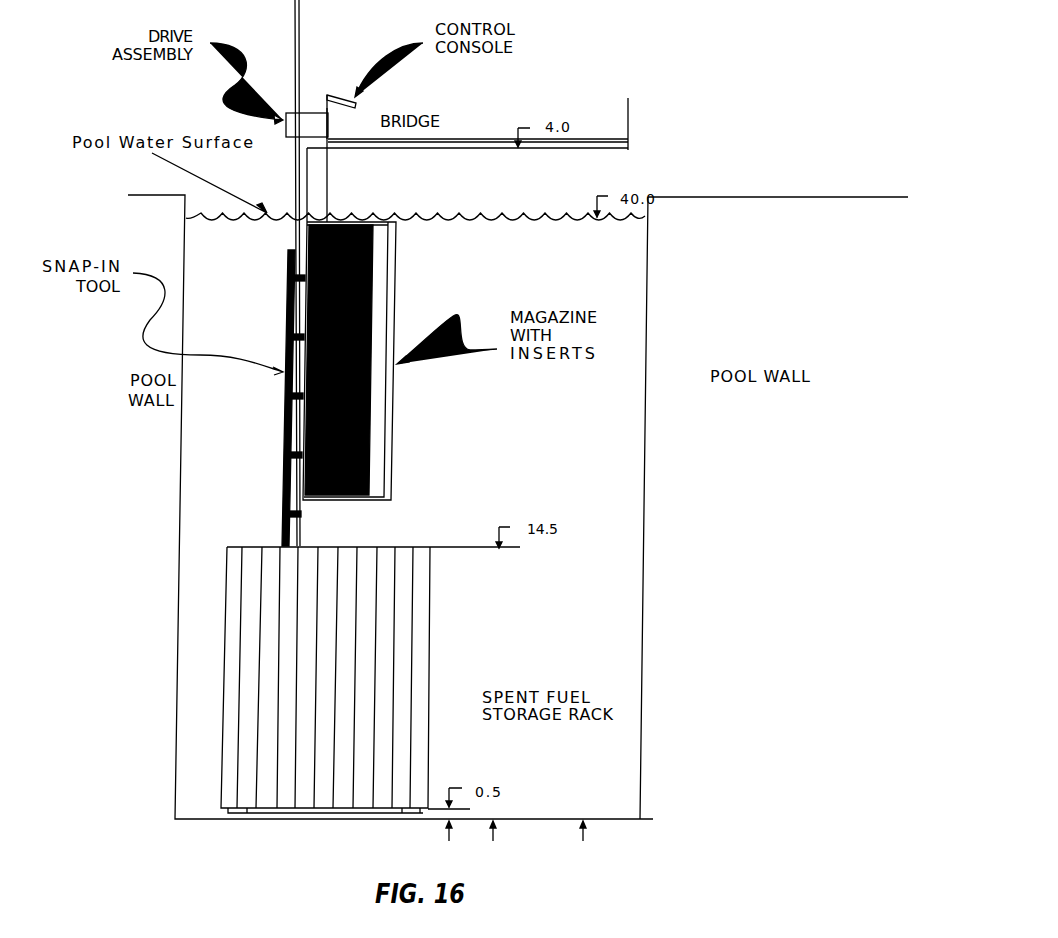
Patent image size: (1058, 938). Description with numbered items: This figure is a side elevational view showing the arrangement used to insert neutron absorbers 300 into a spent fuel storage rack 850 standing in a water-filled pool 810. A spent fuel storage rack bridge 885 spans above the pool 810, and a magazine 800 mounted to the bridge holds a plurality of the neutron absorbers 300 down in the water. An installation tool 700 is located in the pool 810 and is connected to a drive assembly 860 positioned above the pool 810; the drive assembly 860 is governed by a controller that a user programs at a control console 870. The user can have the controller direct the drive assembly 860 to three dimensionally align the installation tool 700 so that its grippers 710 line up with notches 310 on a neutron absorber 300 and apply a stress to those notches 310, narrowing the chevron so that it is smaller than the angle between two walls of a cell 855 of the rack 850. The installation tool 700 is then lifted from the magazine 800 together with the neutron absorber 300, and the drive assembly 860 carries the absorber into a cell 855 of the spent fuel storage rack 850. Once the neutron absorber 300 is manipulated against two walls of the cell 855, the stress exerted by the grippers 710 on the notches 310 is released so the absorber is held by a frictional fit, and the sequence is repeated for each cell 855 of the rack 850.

The drive assembly 860 is at (303, 121).
The control console 870 is at (357, 98).
The bridge 885 is at (628, 145).
The magazine 800 is at (390, 304).
The neutron absorber 300 is at (430, 312).
The notches 310 is at (305, 337).
The installation tool 700 is at (327, 398).
The grippers 710 is at (285, 272).
The cell 855 is at (312, 552).
The spent fuel storage rack 850 is at (441, 643).
The pool 810 is at (146, 506).